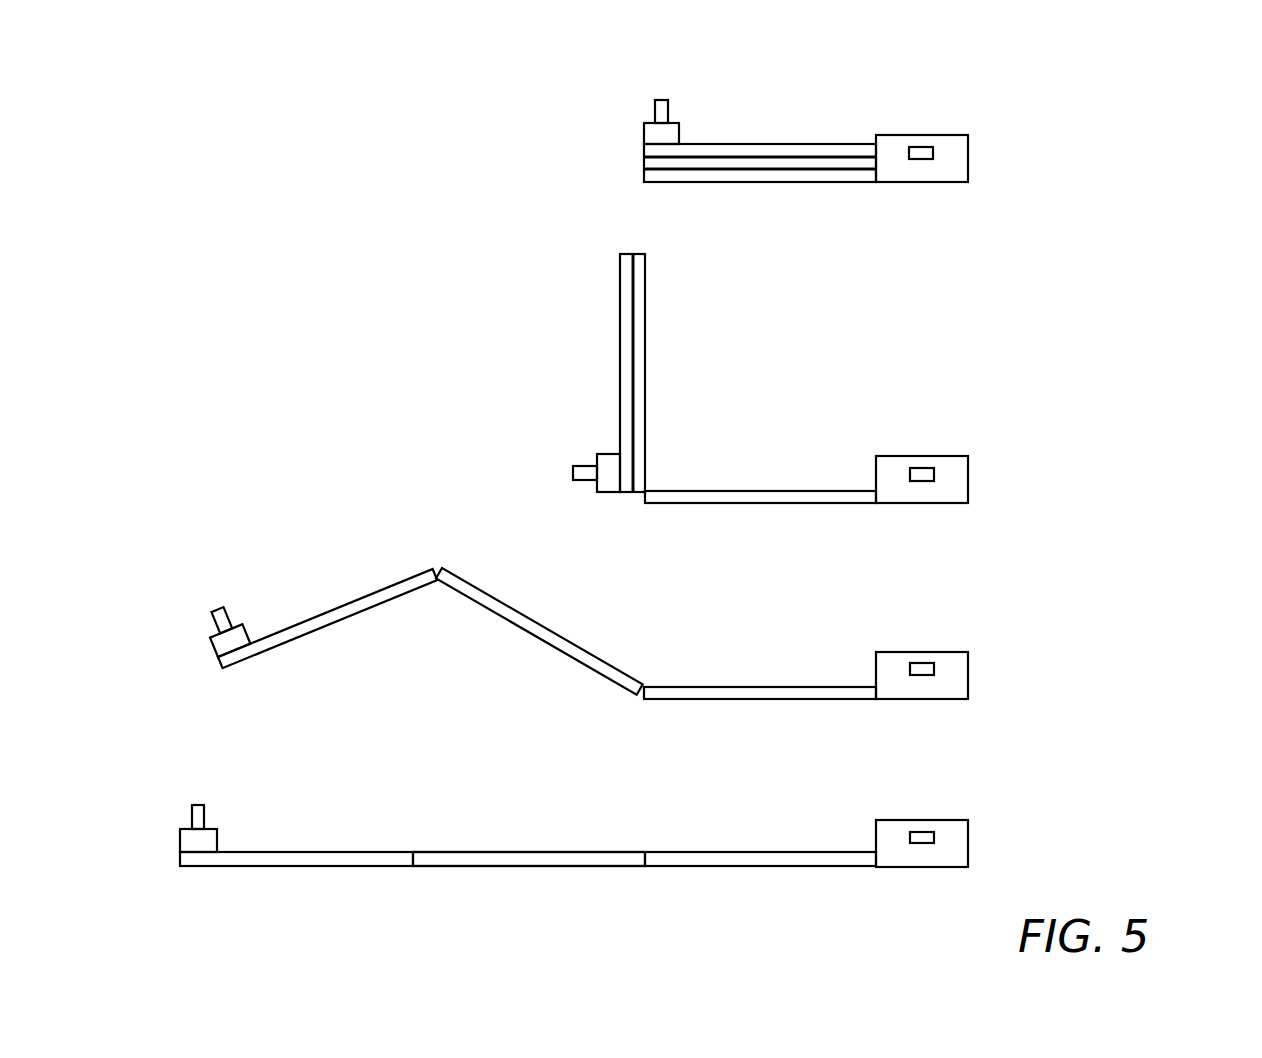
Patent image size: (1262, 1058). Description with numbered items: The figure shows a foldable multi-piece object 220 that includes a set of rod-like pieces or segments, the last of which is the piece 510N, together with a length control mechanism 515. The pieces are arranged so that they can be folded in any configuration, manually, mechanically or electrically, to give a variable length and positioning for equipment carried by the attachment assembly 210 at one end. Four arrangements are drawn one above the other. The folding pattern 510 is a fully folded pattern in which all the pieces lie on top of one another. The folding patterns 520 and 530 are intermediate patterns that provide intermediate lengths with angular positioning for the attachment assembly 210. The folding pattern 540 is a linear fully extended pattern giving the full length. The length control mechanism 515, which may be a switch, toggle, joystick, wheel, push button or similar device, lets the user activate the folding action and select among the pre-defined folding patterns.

The foldable multi-piece object 220 is at (1127, 107).
The attachment assembly 210 is at (645, 141).
The length control mechanism 515 is at (930, 152).
The folding pattern 510 is at (786, 195).
The folding pattern 520 is at (770, 418).
The folding pattern 530 is at (584, 654).
The folding pattern 540 is at (574, 865).
The piece 510N is at (353, 860).